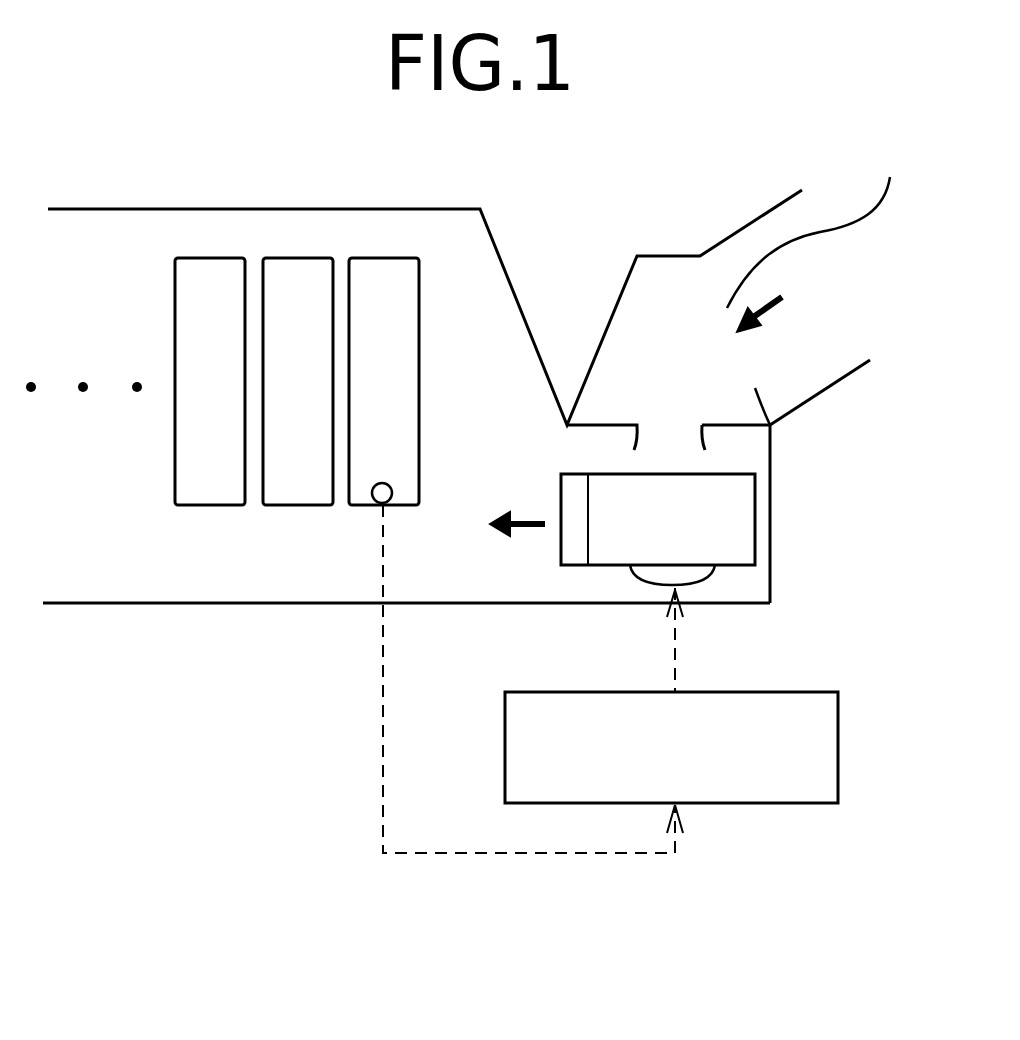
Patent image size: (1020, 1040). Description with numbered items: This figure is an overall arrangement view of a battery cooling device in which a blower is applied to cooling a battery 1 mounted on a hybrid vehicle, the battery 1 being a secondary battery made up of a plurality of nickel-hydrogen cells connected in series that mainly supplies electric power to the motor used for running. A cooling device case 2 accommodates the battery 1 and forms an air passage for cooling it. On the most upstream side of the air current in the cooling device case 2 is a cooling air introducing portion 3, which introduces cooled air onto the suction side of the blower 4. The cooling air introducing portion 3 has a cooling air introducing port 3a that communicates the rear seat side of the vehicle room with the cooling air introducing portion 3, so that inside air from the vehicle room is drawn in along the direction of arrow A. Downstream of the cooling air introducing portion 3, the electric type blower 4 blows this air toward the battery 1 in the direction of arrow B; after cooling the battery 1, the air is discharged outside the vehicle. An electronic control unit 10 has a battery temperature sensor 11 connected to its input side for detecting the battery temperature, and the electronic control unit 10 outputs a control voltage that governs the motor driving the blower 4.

The battery 1 is at (205, 257).
The cooling device case 2 is at (232, 603).
The cooling air introducing portion 3 is at (663, 242).
The cooling air introducing port 3a is at (821, 218).
The blower 4 is at (737, 567).
The electronic control unit 10 is at (747, 803).
The battery temperature sensor 11 is at (372, 502).
The arrow A is at (755, 315).
The arrow B is at (530, 532).